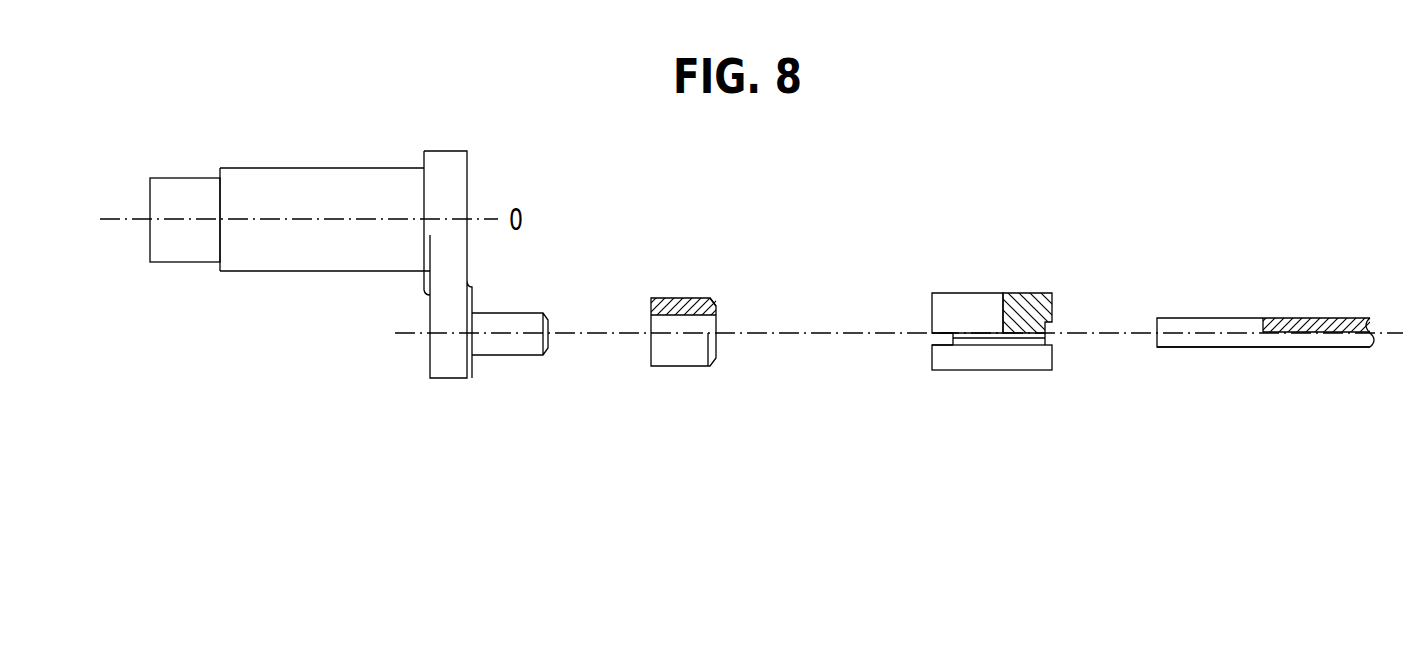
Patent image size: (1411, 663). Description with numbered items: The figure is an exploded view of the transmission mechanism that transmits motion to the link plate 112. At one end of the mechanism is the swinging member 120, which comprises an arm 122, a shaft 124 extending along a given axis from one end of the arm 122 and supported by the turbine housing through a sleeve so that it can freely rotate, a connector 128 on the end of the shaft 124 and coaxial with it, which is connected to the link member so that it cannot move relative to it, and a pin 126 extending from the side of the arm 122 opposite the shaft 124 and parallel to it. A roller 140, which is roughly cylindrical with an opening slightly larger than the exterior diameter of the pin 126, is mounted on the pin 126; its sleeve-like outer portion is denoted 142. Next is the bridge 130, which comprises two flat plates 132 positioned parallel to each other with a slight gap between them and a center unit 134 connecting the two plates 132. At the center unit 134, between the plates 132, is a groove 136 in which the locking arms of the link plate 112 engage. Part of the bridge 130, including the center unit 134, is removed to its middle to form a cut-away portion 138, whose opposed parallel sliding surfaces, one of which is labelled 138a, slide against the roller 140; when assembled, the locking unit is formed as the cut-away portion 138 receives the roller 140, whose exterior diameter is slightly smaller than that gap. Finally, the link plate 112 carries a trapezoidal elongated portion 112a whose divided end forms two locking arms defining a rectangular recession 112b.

The swinging member 120 is at (328, 128).
The arm 122 is at (444, 163).
The shaft 124 is at (282, 262).
The pin 126 is at (505, 345).
The connector 128 is at (180, 190).
The bridge 130 is at (1032, 254).
The flat plates 132 is at (1052, 305).
The center unit 134 is at (1052, 338).
The groove 136 is at (940, 345).
The cut-away portion 138 is at (940, 298).
The holder portion 138a is at (1000, 298).
The roller 140 is at (680, 258).
The bushing sleeve 142 is at (716, 316).
The link plate 112 is at (1302, 271).
The elongated portion 112a is at (1302, 348).
The rectangular recession 112b is at (1214, 327).